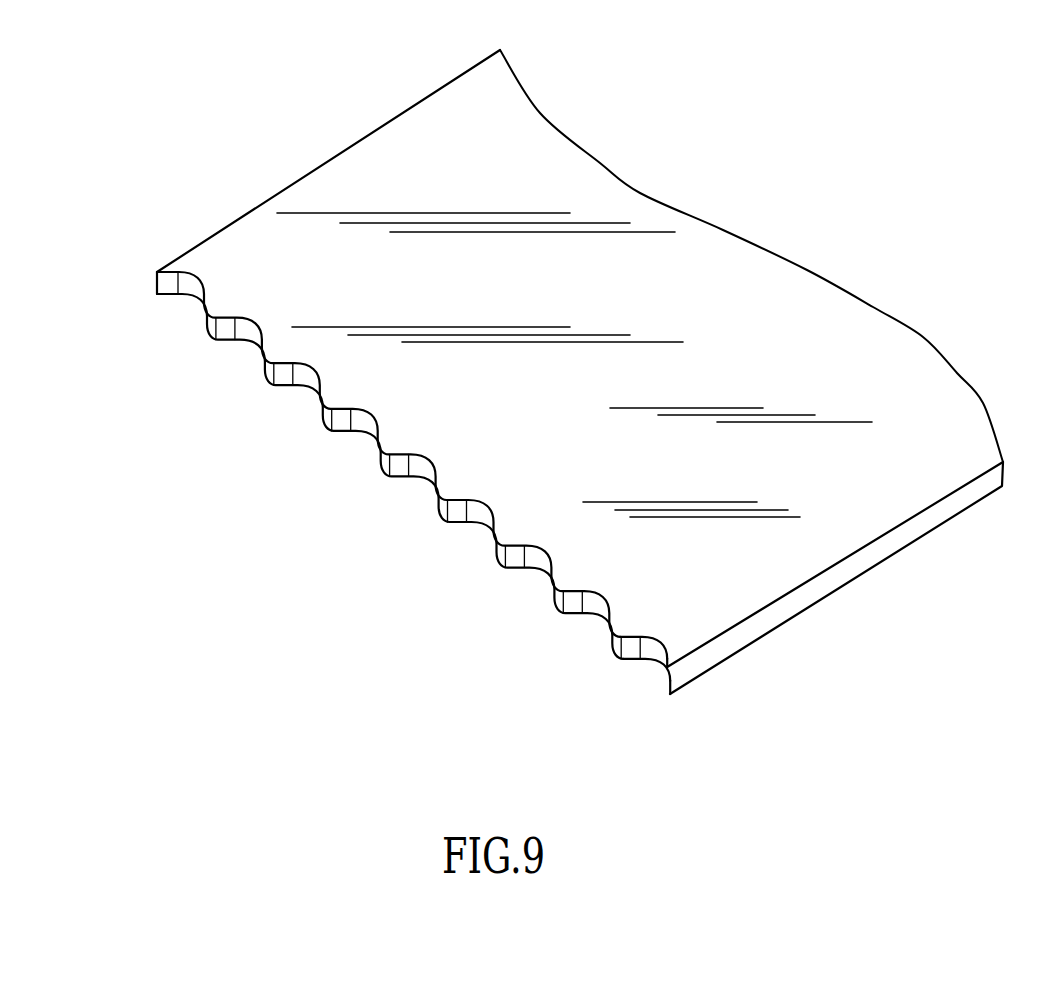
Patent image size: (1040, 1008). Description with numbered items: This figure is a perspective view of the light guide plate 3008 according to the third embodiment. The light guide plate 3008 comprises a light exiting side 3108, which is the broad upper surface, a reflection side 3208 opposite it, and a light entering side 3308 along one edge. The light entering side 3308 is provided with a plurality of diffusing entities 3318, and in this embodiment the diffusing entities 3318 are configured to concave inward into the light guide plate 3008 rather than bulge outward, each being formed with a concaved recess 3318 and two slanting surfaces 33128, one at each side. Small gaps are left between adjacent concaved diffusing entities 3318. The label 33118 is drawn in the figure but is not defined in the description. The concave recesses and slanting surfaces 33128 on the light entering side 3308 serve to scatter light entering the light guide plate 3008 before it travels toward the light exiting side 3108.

The light guide plate 3008 is at (543, 418).
The light exiting side 3108 is at (240, 247).
The reflection side 3208 is at (878, 565).
The light entering side 3308 is at (426, 529).
The diffusing entities 3318 is at (617, 711).
The step tread 33118 is at (653, 673).
The slanting surfaces 33128 is at (668, 680).